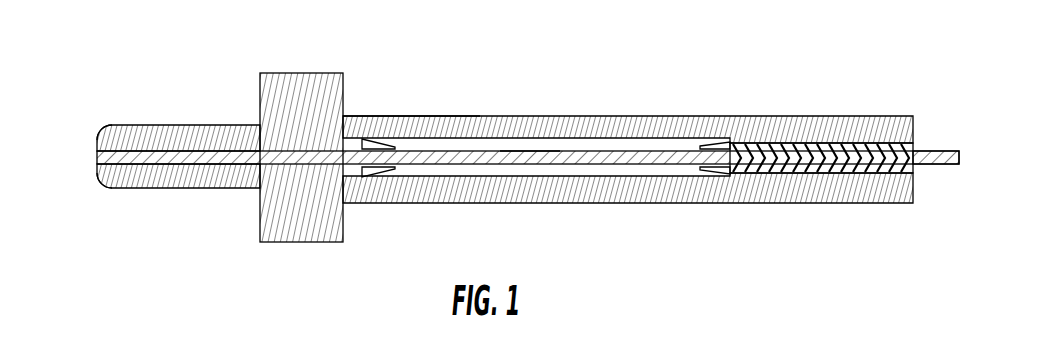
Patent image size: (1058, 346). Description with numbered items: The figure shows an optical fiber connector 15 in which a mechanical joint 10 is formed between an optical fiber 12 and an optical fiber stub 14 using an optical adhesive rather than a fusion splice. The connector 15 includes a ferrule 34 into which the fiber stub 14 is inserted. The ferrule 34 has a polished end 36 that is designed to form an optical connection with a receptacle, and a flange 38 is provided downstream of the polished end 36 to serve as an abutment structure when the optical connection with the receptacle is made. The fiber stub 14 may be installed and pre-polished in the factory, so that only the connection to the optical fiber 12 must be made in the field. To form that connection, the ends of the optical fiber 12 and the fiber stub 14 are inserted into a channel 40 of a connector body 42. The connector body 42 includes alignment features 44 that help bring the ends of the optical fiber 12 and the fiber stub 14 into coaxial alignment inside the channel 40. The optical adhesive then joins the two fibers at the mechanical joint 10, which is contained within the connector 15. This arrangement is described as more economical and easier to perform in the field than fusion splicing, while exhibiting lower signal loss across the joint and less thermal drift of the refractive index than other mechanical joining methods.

The mechanical joint 10 is at (537, 144).
The optical fiber 12 is at (935, 168).
The optical fiber stub 14 is at (167, 158).
The connector 15 is at (403, 77).
The ferrule 34 is at (190, 138).
The polished end 36 is at (82, 157).
The flange 38 is at (301, 97).
The channel 40 is at (634, 138).
The connector body 42 is at (795, 128).
The alignment features 44 is at (363, 171).